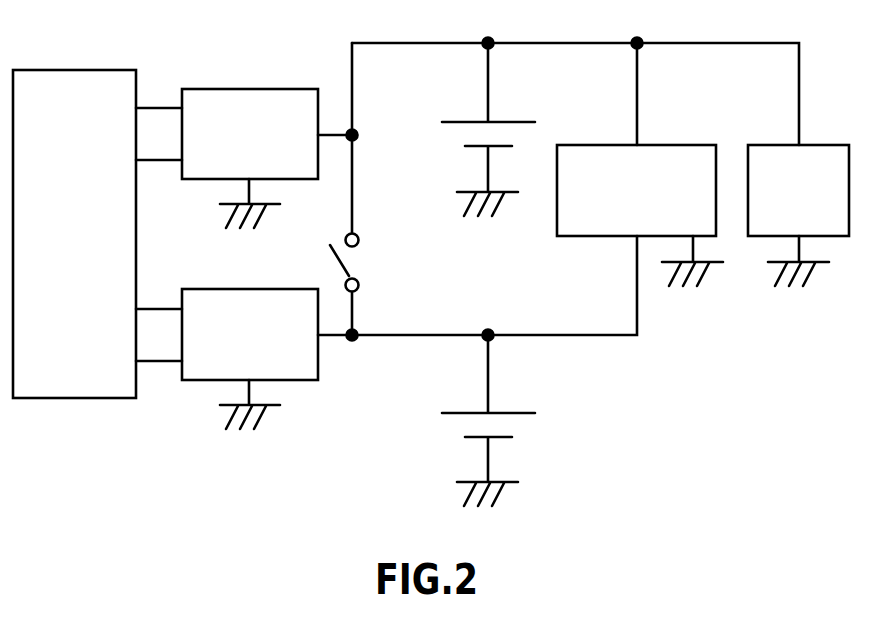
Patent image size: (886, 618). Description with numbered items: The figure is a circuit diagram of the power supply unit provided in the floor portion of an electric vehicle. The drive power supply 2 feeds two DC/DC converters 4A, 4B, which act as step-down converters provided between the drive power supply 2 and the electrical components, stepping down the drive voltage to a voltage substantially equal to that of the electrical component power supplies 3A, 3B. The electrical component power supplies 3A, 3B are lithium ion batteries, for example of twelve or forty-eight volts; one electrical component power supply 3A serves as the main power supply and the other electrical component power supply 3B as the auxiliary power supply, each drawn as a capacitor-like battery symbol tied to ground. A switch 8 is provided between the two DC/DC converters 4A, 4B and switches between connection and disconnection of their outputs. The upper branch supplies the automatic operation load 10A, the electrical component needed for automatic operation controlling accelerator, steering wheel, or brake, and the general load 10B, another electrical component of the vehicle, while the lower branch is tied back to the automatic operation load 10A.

The drive power supply 2 is at (75, 70).
The DC/DC converter 4A is at (290, 89).
The DC/DC converter 4B is at (290, 289).
The electrical component power supply 3A is at (488, 122).
The electrical component power supply 3B is at (488, 413).
The switch 8 is at (340, 262).
The automatic operation load 10A is at (677, 145).
The general load 10B is at (822, 145).